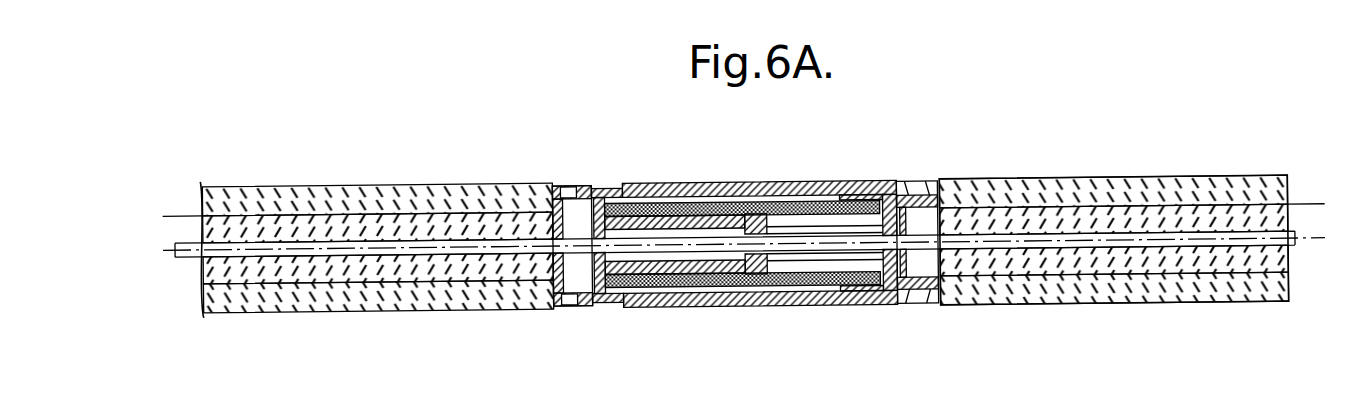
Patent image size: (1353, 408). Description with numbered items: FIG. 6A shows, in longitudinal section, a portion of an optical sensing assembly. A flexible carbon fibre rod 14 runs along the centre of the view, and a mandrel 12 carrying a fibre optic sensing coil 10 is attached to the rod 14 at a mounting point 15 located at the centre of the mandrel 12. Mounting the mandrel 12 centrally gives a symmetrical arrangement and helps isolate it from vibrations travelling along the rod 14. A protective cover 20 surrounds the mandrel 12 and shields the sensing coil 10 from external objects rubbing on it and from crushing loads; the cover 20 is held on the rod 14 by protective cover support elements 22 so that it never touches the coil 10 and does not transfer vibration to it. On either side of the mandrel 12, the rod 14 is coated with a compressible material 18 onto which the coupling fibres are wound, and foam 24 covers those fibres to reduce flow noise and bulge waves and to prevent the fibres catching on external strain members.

The fibre optic sensing coil 10 is at (840, 196).
The mandrel 12 is at (735, 205).
The flexible carbon fibre rod 14 is at (1138, 222).
The mounting point 15 is at (740, 265).
The compressible material 18 is at (1207, 218).
The protective cover 20 is at (673, 182).
The protective cover support element 22 is at (583, 200).
The foam 24 is at (1057, 179).